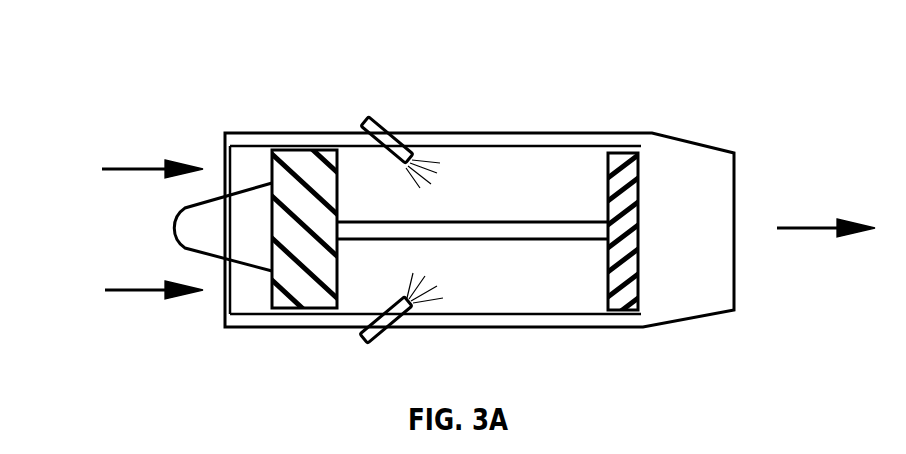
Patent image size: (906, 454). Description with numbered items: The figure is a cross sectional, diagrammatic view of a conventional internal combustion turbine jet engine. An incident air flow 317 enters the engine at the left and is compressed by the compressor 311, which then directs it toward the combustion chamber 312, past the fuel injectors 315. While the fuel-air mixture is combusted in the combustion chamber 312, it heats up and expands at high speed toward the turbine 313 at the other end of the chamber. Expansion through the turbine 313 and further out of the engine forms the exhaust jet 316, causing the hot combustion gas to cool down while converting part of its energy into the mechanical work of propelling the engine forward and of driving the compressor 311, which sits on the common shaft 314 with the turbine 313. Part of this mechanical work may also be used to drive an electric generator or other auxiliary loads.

The compressor 311 is at (307, 263).
The combustion chamber 312 is at (523, 170).
The turbine 313 is at (628, 280).
The common shaft 314 is at (540, 230).
The fuel injectors 315 is at (402, 300).
The exhaust jet 316 is at (840, 220).
The incident air flow 317 is at (167, 173).